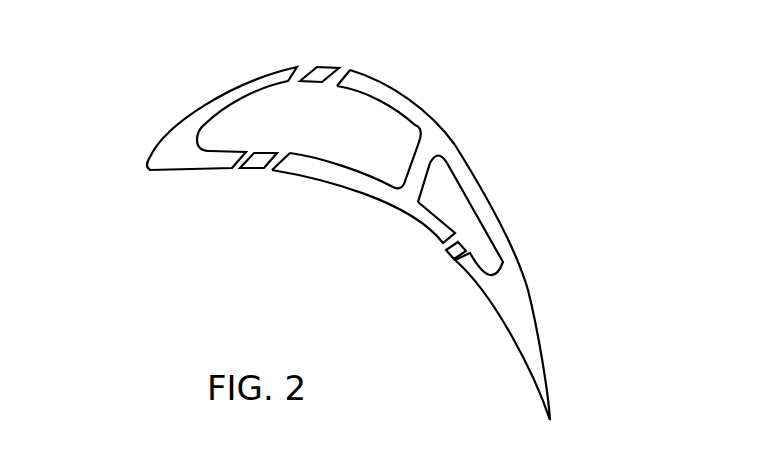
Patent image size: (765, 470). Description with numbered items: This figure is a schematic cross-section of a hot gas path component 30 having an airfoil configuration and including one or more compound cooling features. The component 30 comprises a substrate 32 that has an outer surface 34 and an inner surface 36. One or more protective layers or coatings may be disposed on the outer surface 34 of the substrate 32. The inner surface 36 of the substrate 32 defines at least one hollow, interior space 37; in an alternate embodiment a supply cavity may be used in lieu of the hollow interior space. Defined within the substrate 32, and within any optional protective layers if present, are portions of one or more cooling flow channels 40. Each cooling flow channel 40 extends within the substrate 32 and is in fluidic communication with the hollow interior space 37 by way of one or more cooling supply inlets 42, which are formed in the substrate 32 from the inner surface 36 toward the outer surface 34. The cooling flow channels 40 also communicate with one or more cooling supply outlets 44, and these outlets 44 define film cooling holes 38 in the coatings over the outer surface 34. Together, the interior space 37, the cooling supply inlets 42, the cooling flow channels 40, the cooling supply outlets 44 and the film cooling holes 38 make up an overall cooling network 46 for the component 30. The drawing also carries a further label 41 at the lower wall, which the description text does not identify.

The hot gas path component 30 is at (592, 138).
The substrate 32 is at (433, 140).
The outer surface 34 is at (527, 282).
The inner surface 36 is at (317, 157).
The hollow interior space 37 is at (318, 135).
The film cooling holes 38 is at (237, 170).
The cooling flow channels 40 is at (341, 70).
The lower wall end 41 is at (258, 172).
The cooling supply inlets 42 is at (313, 66).
The cooling supply outlets 44 is at (443, 243).
The cooling network 46 is at (126, 225).